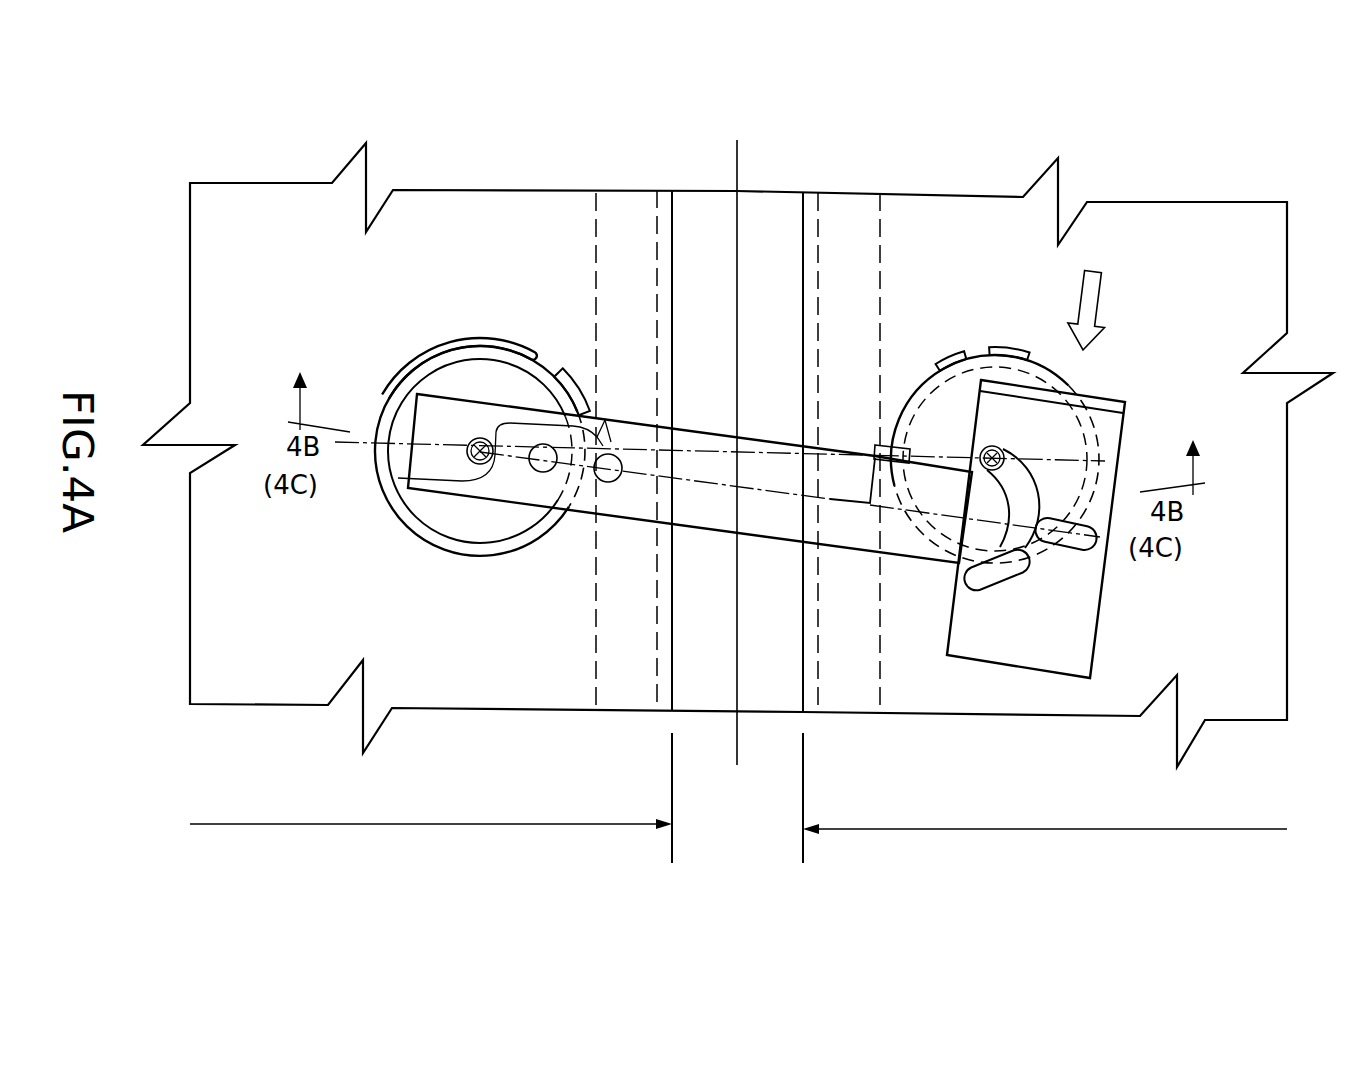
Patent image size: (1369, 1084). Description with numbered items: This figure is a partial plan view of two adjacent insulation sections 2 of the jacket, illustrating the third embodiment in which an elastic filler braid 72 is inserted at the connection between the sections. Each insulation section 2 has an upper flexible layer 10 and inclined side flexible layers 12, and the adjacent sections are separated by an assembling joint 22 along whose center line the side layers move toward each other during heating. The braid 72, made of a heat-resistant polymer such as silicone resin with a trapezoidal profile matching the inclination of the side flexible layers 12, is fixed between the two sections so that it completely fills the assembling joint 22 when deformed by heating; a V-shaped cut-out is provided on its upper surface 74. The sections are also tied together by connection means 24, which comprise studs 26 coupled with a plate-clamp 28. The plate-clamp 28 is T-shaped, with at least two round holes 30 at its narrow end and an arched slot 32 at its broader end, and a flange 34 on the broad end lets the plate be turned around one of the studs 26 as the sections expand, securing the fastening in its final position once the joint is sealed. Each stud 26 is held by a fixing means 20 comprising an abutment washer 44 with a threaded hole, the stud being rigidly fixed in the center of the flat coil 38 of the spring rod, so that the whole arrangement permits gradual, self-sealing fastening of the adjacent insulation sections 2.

The insulation section 2 is at (1256, 255).
The upper flexible layer 10 is at (452, 215).
The side flexible layer 12 is at (818, 307).
The fixing means 20 is at (946, 396).
The assembling joint 22 is at (772, 215).
The connection means 24 is at (625, 523).
The stud 26 is at (996, 447).
The plate-clamp 28 is at (835, 470).
The round hole 30 is at (604, 440).
The arched slot 32 is at (1005, 578).
The flange 34 is at (1088, 395).
The flat coil 38 is at (498, 355).
The abutment washer 44 is at (480, 387).
The elastic filler braid 72 is at (686, 285).
The upper surface of the braid 74 is at (742, 572).